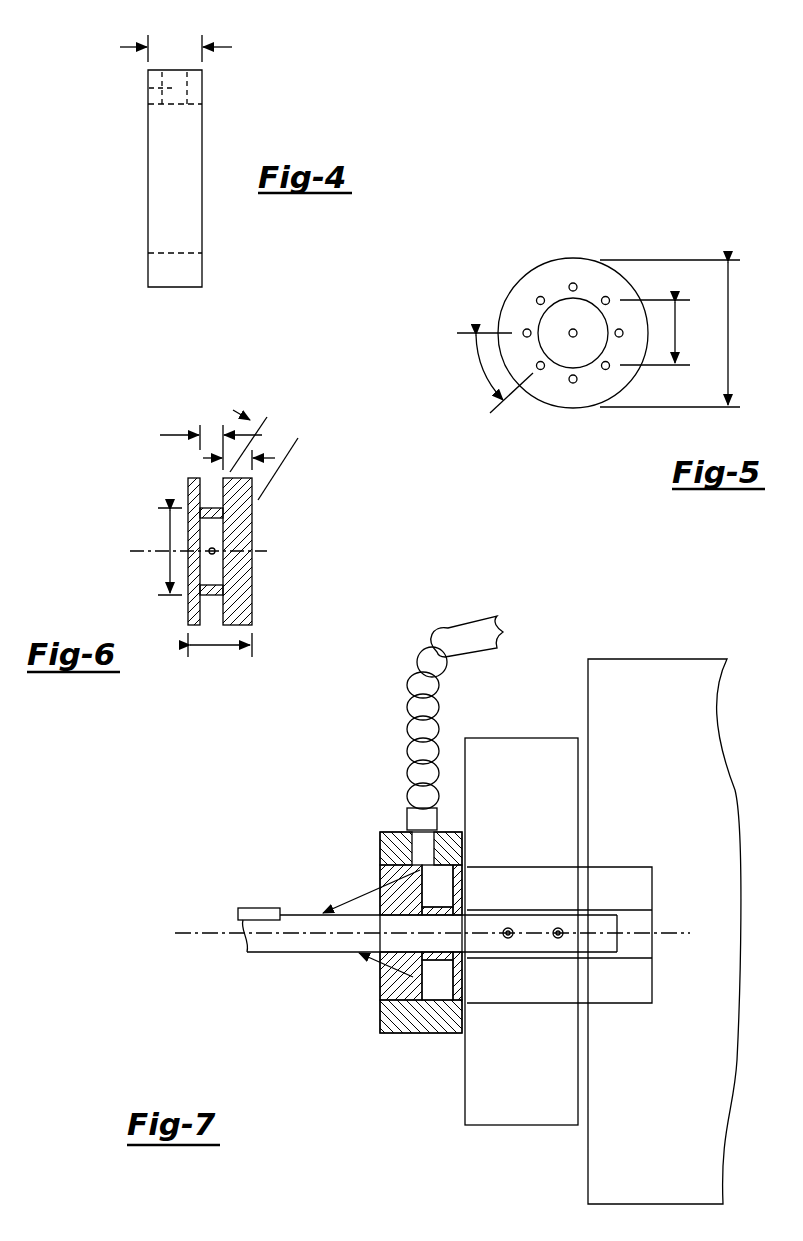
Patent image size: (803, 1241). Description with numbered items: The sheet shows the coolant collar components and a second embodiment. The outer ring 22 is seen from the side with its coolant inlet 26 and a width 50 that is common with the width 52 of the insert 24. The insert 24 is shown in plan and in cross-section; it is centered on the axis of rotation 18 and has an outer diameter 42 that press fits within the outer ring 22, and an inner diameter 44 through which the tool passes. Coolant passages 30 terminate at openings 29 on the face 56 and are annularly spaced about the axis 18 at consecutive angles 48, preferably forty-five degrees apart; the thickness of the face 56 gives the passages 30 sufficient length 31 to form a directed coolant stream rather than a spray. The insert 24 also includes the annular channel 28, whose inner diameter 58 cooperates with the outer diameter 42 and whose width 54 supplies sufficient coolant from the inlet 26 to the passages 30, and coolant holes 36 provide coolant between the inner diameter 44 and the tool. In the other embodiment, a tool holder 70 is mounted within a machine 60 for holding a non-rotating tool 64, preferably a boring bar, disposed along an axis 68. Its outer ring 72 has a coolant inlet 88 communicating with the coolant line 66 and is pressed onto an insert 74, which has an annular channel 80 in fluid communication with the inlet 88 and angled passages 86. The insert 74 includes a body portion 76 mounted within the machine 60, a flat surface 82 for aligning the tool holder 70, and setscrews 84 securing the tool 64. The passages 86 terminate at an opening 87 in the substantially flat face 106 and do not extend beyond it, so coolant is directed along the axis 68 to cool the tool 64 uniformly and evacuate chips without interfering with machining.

In FIG. 4, the outer ring 22 is at (218, 272).
In FIG. 4, the coolant inlet 26 is at (150, 88).
In FIG. 4, the width of outer ring 50 is at (222, 47).
In FIG. 5, the insert 24 is at (585, 233).
In FIG. 6, the insert 24 is at (335, 531).
In FIG. 5, the axis of rotation 18 is at (580, 323).
In FIG. 6, the axis of rotation 18 is at (137, 551).
In FIG. 5, the opening 29 is at (611, 370).
In FIG. 6, the opening 29 is at (257, 503).
In FIG. 5, the coolant passages 30 is at (534, 299).
In FIG. 6, the coolant passages 30 is at (253, 600).
In FIG. 6, the length of passages 31 is at (300, 451).
In FIG. 5, the outer diameter of insert 42 is at (729, 333).
In FIG. 5, the inner diameter 44 is at (677, 333).
In FIG. 5, the angle between passages 48 is at (481, 371).
In FIG. 6, the annular channel 28 is at (210, 608).
In FIG. 6, the coolant holes 36 is at (217, 549).
In FIG. 6, the width of insert 52 is at (218, 648).
In FIG. 6, the width of annular channel 54 is at (183, 435).
In FIG. 6, the face / thickness of insert 56 is at (203, 458).
In FIG. 6, the inner diameter of annular channel 58 is at (168, 540).
In FIG. 7, the machine 60 is at (672, 815).
In FIG. 7, the non-rotating tool 64 is at (268, 946).
In FIG. 7, the coolant line 66 is at (425, 662).
In FIG. 7, the axis 68 is at (195, 924).
In FIG. 7, the tool holder 70 is at (367, 1055).
In FIG. 7, the outer ring 72 is at (451, 1031).
In FIG. 7, the insert 74 is at (388, 975).
In FIG. 7, the body portion 76 is at (485, 993).
In FIG. 7, the annular channel 80 is at (440, 993).
In FIG. 7, the flat surface 82 is at (612, 942).
In FIG. 7, the setscrews 84 is at (558, 939).
In FIG. 7, the passages 86 is at (412, 862).
In FIG. 7, the opening 87 is at (377, 884).
In FIG. 7, the coolant inlet 88 is at (433, 828).
In FIG. 7, the face 106 is at (378, 910).